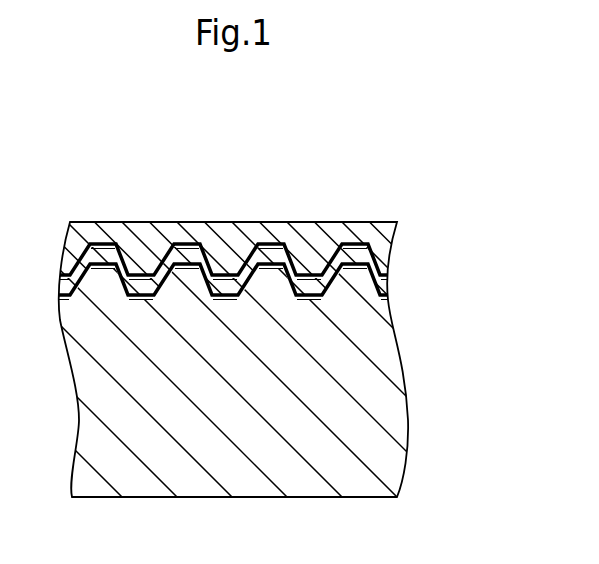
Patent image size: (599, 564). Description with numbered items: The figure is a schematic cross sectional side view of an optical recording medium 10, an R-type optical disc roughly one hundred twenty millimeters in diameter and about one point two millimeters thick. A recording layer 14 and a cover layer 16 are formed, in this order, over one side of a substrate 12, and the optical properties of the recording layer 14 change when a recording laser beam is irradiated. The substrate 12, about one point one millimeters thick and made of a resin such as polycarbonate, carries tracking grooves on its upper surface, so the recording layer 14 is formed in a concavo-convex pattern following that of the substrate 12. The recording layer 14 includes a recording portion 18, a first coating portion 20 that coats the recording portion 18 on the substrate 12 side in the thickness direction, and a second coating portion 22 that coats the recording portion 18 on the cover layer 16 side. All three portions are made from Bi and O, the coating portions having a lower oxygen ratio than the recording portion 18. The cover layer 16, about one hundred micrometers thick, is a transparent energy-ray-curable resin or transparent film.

The optical recording medium 10 is at (244, 178).
The substrate 12 is at (403, 382).
The recording layer 14 is at (299, 360).
The cover layer 16 is at (397, 229).
The recording portion 18 is at (388, 288).
The first coating portion 20 is at (238, 294).
The second coating portion 22 is at (389, 268).